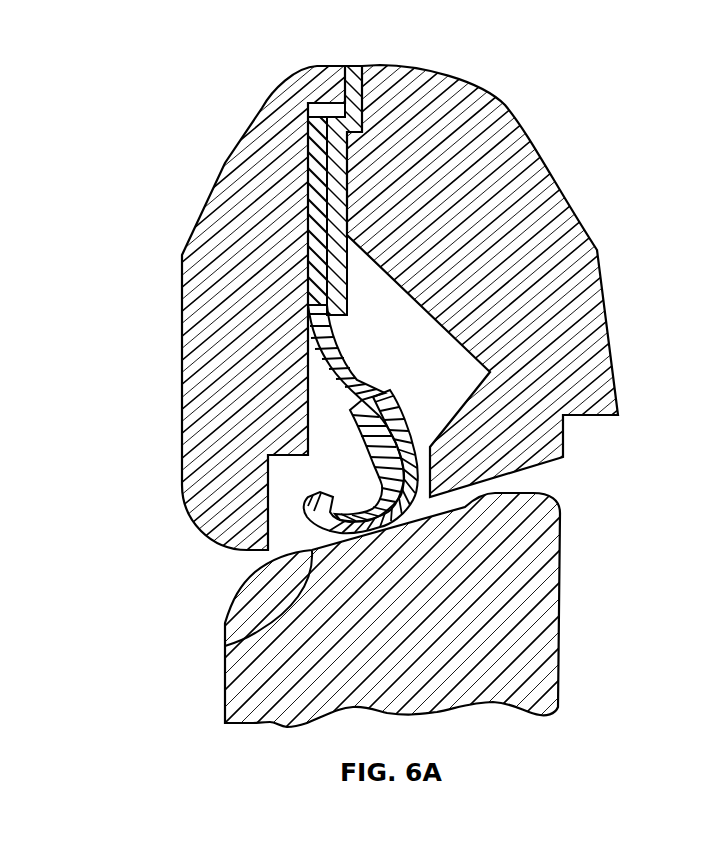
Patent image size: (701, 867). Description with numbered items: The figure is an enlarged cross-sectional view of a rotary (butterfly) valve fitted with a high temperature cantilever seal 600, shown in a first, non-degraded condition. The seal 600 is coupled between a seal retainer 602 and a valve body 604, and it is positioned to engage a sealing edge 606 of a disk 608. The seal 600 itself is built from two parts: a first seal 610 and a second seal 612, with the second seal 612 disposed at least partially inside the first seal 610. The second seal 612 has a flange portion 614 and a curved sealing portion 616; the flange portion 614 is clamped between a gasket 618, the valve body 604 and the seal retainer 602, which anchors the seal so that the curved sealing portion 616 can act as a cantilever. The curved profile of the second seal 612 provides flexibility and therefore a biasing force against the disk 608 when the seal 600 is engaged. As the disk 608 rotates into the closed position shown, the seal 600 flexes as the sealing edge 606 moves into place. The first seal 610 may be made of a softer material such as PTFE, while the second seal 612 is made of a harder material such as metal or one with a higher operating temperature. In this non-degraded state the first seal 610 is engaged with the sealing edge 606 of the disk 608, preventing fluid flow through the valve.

The high temperature cantilever seal 600 is at (364, 395).
The seal retainer 602 is at (213, 267).
The valve body 604 is at (543, 198).
The sealing edge 606 is at (238, 643).
The disk 608 is at (513, 597).
The first seal 610 is at (305, 505).
The second seal 612 is at (332, 358).
The flange portion 614 is at (325, 253).
The curved sealing portion 616 is at (360, 493).
The gasket 618 is at (343, 167).